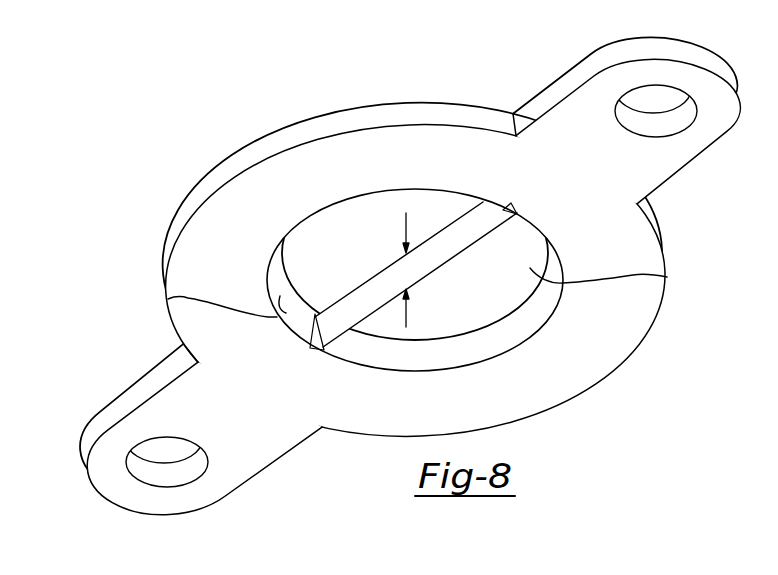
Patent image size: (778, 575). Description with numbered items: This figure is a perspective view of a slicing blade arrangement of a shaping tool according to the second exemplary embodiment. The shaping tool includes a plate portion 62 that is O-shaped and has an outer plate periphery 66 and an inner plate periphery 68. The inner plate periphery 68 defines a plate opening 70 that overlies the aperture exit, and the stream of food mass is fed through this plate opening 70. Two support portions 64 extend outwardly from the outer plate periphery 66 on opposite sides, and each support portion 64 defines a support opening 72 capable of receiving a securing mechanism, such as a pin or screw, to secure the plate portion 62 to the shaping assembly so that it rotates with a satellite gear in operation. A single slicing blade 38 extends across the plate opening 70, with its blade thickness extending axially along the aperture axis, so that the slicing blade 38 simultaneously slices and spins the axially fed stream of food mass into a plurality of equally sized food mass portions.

The slicing blade 38 is at (352, 313).
The plate portion 62 is at (385, 280).
The support portion 64 is at (385, 259).
The outer plate periphery 66 is at (197, 189).
The inner plate periphery 68 is at (168, 299).
The plate opening 70 is at (667, 277).
The support opening 72 is at (655, 103).